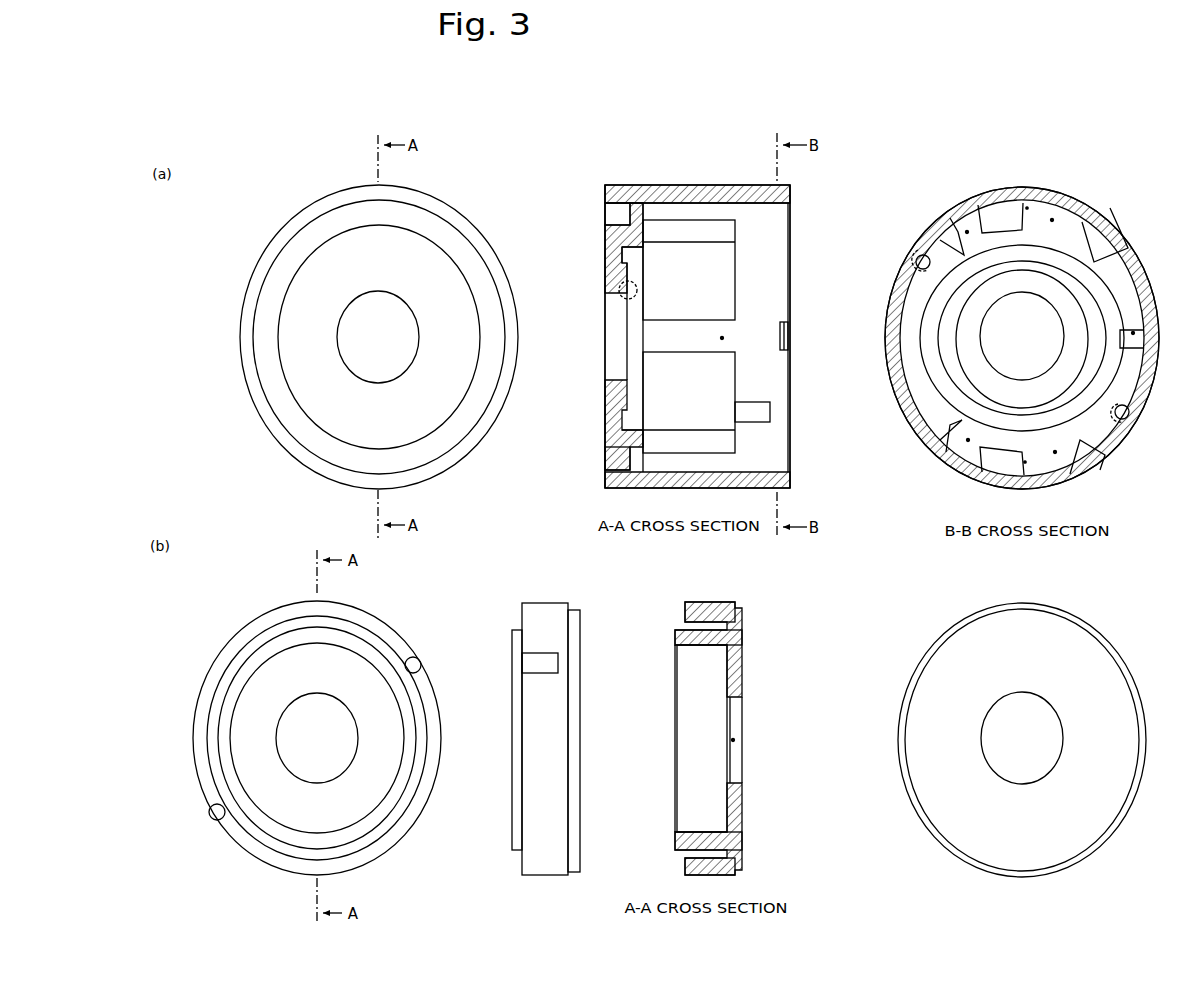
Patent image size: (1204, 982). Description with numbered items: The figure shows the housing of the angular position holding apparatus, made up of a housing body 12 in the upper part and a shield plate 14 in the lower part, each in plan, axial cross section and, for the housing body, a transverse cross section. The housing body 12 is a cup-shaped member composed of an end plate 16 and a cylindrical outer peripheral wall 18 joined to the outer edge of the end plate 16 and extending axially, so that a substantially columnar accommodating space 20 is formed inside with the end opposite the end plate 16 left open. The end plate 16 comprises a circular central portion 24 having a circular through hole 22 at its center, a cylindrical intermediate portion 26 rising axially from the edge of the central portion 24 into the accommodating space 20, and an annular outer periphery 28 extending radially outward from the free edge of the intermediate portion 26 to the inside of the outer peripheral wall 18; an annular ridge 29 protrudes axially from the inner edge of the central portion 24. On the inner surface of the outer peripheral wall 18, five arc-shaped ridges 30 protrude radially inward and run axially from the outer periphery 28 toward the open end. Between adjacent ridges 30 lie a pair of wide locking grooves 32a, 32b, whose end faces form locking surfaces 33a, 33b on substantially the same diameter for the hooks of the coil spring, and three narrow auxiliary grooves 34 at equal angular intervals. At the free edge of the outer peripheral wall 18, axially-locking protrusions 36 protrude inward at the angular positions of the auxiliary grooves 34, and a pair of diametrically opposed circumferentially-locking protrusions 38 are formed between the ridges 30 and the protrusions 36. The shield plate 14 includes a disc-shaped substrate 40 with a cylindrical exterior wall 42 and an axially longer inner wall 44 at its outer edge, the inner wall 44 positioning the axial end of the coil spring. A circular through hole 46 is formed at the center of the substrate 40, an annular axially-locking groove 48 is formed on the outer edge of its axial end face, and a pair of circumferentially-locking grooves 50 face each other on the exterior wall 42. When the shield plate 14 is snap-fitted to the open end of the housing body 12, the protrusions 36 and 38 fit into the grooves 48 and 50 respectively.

The housing body 12 is at (670, 135).
The shield plate 14 is at (588, 567).
The end plate 16 is at (317, 378).
The outer peripheral wall 18 is at (632, 183).
The accommodating space 20 is at (720, 275).
The through hole 22 is at (370, 343).
The central portion 24 is at (620, 272).
The intermediate portion 26 is at (618, 257).
The outer periphery 28 is at (622, 217).
The annular ridge 29 is at (620, 300).
The arc-shaped ridges 30 is at (660, 367).
The locking groove 32a is at (1052, 220).
The locking groove 32b is at (1055, 452).
The locking surface 33a is at (1027, 208).
The locking surface 33b is at (1025, 462).
The auxiliary grooves 34 is at (940, 180).
The axially-locking protrusions 36 is at (784, 350).
The circumferentially-locking protrusions 38 is at (757, 422).
The substrate 40 is at (743, 662).
The exterior wall 42 is at (280, 608).
The inner wall 44 is at (250, 675).
The through hole 46 is at (733, 740).
The axially-locking groove 48 is at (573, 728).
The circumferentially-locking grooves 50 is at (420, 660).